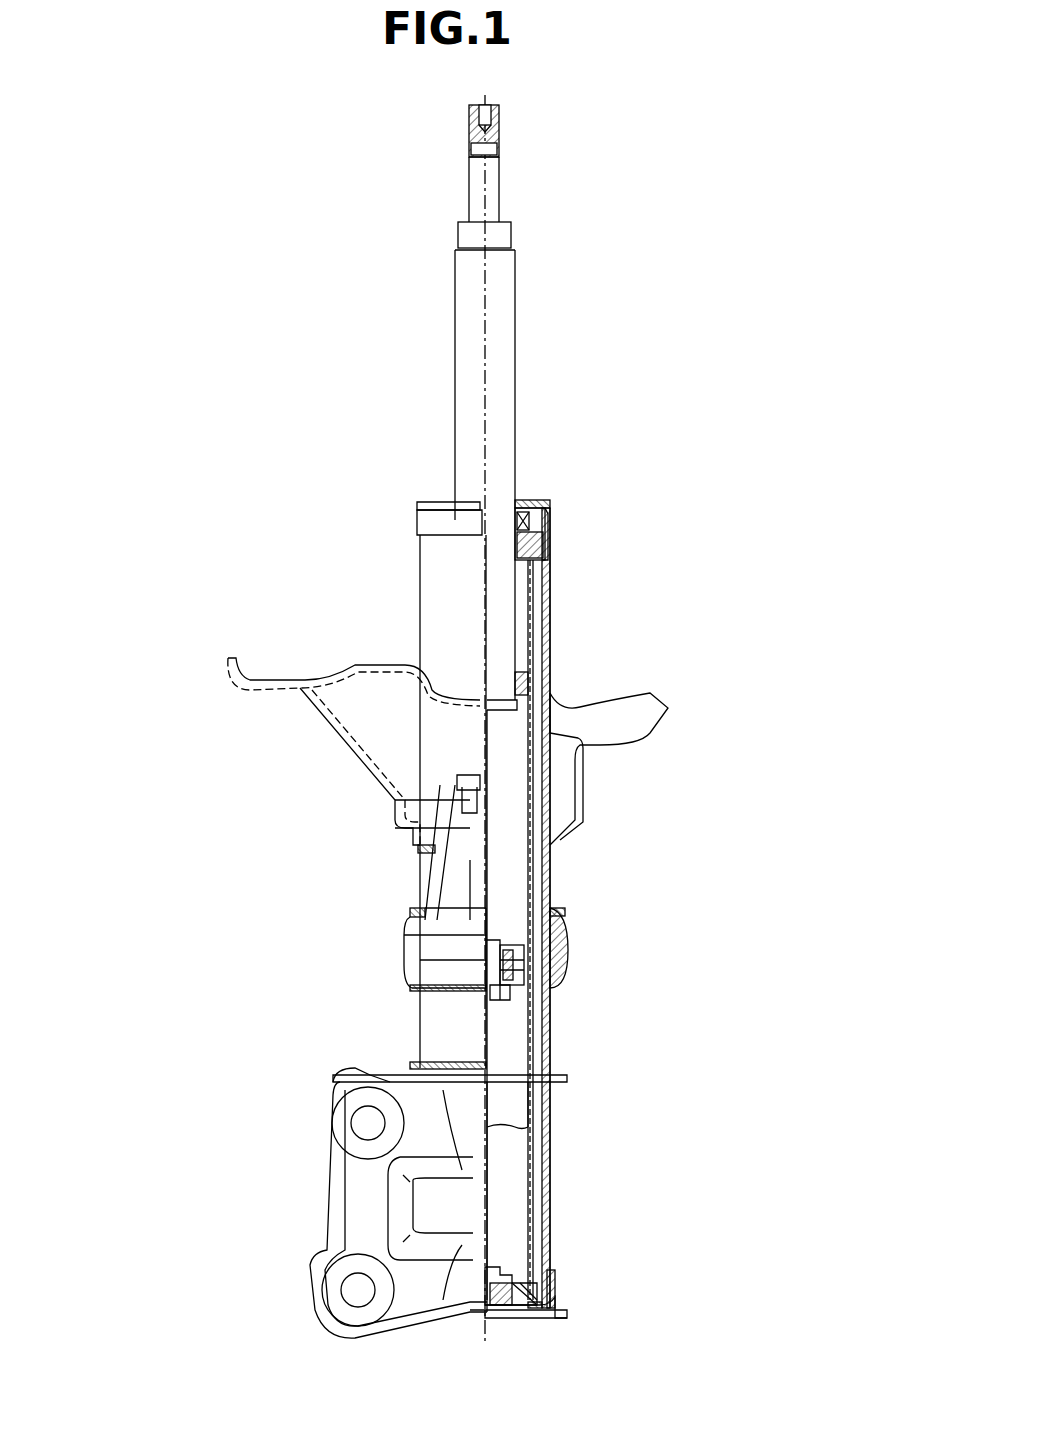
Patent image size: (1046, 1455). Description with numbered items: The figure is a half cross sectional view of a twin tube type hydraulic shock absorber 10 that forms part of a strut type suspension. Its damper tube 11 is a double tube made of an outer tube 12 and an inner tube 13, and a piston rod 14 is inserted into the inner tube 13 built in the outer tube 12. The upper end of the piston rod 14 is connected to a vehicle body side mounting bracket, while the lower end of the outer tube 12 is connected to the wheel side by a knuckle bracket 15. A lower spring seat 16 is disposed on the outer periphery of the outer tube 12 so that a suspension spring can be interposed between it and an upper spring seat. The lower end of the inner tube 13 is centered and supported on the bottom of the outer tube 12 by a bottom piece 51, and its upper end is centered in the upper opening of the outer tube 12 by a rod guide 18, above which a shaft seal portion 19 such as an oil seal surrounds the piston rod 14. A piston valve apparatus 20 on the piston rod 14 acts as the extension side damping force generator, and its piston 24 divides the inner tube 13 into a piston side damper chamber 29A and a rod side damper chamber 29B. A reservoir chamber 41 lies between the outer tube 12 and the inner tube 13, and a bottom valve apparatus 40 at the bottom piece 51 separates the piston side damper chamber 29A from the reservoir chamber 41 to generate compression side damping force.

The hydraulic shock absorber 10 is at (357, 228).
The damper tube 11 is at (553, 597).
The outer tube 12 is at (550, 628).
The inner tube 13 is at (535, 668).
The piston rod 14 is at (502, 385).
The knuckle bracket 15 is at (345, 1180).
The lower spring seat 16 is at (253, 688).
The rod guide 18 is at (545, 548).
The shaft seal portion 19 is at (545, 503).
The piston valve apparatus 20 is at (527, 937).
The piston 24 is at (525, 963).
The piston side damper chamber 29A is at (510, 1015).
The rod side damper chamber 29B is at (520, 884).
The bottom valve apparatus 40 is at (510, 1265).
The reservoir chamber 41 is at (537, 1160).
The bottom piece 51 is at (532, 1313).